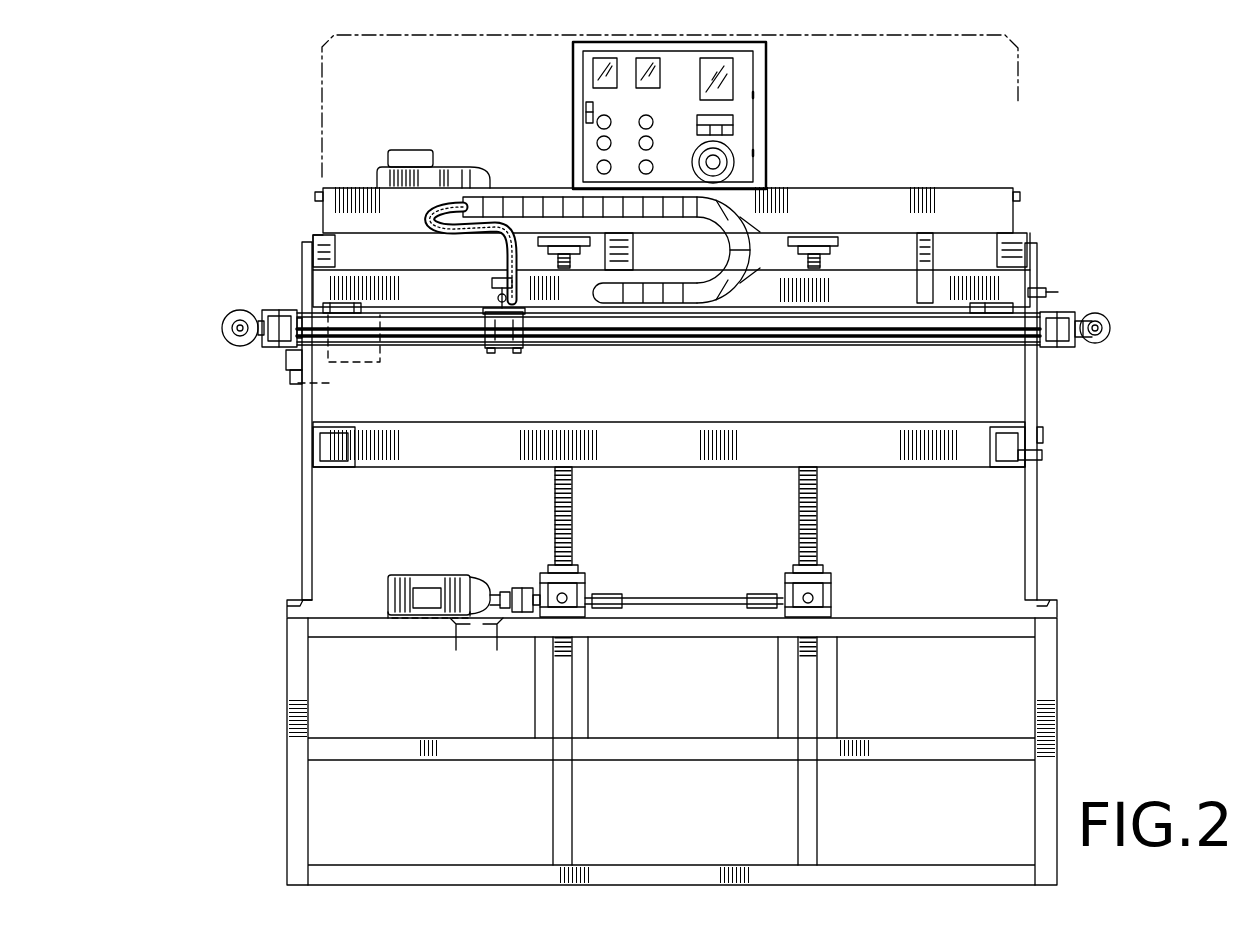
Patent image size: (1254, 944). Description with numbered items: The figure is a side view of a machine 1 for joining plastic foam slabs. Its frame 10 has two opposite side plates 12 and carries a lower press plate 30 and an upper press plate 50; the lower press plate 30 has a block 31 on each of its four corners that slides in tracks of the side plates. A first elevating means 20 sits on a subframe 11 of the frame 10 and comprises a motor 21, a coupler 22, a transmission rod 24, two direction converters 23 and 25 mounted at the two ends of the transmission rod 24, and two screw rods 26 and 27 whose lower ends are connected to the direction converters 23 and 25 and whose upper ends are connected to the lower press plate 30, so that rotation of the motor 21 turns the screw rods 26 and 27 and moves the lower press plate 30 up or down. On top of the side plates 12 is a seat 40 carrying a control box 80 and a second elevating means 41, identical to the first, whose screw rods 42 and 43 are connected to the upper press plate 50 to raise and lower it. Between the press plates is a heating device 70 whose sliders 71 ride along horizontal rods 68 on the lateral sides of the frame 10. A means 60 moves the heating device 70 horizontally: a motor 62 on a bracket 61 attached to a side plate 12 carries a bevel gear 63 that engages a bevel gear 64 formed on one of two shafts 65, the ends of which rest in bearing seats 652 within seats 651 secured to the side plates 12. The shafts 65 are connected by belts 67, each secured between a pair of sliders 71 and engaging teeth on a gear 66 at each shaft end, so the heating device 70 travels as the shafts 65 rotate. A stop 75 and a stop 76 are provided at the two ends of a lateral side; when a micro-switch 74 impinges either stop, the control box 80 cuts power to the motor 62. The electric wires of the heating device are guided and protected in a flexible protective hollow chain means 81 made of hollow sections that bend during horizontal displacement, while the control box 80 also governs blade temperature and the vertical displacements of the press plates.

The machine 1 is at (296, 148).
The frame 10 is at (258, 660).
The subframe 11 is at (455, 637).
The side plate 12 is at (1030, 553).
The first elevating means 20 is at (657, 562).
The motor 21 is at (427, 575).
The coupler 22 is at (518, 588).
The direction converter 23 is at (572, 595).
The transmission rod 24 is at (707, 600).
The direction converter 25 is at (822, 598).
The screw rod 26 is at (572, 522).
The screw rod 27 is at (800, 530).
The lower press plate 30 is at (885, 457).
The block 31 is at (1042, 458).
The seat 40 is at (985, 200).
The second elevating means 41 is at (397, 168).
The screw rod 42 is at (565, 268).
The screw rod 43 is at (862, 262).
The upper press plate 50 is at (865, 278).
The means for moving the heating device 60 is at (230, 317).
The bracket 61 is at (330, 383).
The motor 62 is at (380, 362).
The bevel gear 63 is at (268, 350).
The bevel gear 64 is at (242, 352).
The shaft 65 is at (233, 332).
The seat 651 is at (282, 313).
The bearing seat 652 is at (233, 315).
The gear 66 is at (1108, 316).
The belt 67 is at (898, 347).
The horizontal rod 68 is at (805, 328).
The heating device 70 is at (531, 362).
The slider 71 is at (540, 362).
The micro-switch 74 is at (507, 298).
The stop 75 is at (998, 302).
The stop 76 is at (340, 305).
The control box 80 is at (778, 108).
The flexible protective hollow chain means 81 is at (723, 210).